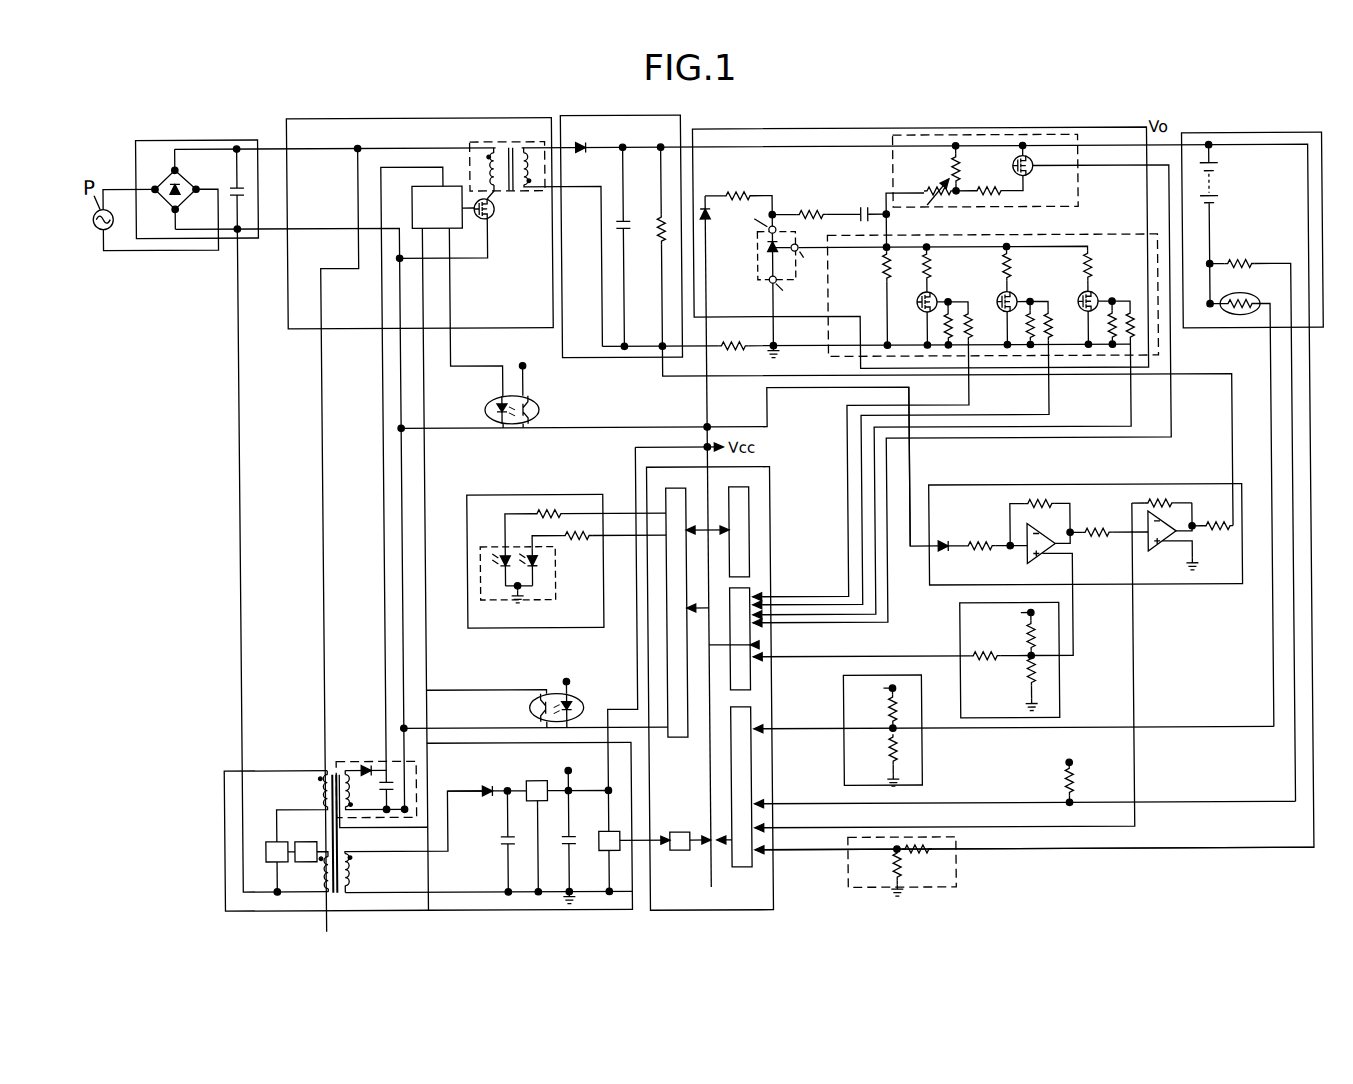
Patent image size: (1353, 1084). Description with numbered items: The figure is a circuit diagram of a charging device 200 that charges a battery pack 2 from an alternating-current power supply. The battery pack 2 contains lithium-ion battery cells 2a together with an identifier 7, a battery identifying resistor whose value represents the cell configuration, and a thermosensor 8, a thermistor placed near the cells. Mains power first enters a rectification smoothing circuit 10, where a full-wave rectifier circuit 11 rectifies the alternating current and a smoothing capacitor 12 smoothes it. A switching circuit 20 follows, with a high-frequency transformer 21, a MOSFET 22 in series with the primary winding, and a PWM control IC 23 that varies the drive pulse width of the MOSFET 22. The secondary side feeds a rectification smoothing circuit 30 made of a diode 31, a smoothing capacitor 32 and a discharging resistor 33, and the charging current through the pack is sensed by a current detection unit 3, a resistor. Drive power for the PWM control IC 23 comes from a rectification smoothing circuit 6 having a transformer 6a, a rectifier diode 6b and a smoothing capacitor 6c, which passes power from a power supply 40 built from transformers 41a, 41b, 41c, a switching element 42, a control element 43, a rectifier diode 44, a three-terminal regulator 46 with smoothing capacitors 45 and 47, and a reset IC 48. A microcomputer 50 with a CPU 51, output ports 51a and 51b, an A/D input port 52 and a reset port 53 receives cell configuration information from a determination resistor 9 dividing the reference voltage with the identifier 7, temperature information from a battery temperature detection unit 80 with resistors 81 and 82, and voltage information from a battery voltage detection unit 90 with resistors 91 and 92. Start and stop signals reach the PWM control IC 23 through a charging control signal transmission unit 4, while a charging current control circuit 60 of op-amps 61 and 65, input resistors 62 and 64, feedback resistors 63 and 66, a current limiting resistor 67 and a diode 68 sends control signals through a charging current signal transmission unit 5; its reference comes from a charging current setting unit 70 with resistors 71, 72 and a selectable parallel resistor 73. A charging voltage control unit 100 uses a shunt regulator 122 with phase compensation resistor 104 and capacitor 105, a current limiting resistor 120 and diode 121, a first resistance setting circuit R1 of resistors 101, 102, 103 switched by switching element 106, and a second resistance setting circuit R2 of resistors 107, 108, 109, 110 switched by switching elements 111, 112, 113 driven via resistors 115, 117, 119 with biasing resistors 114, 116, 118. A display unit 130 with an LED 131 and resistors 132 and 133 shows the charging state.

The charging device 200 is at (125, 106).
The battery pack 2 is at (1283, 135).
The battery cells 2a is at (1220, 189).
The current detection unit 3 is at (740, 343).
The charging control signal transmission unit 4 is at (526, 707).
The charging current signal transmission unit 5 is at (490, 403).
The rectification smoothing circuit 6 is at (345, 760).
The transformer 6a is at (348, 791).
The rectifier diode 6b is at (365, 766).
The smoothing capacitor 6c is at (380, 778).
The identifier 7 is at (1244, 261).
The thermosensor 8 is at (1255, 299).
The second battery type determination resistor 9 is at (1072, 779).
The rectification smoothing circuit 10 is at (165, 138).
The full-wave rectifier circuit 11 is at (168, 181).
The smoothing capacitor 12 is at (231, 183).
The switching circuit 20 is at (306, 117).
The high-frequency transformer 21 is at (471, 147).
The MOSFET 22 is at (495, 206).
The PWM control IC 23 is at (413, 200).
The rectification smoothing circuit 30 is at (600, 115).
The diode 31 is at (589, 145).
The smoothing capacitor 32 is at (627, 222).
The discharging resistor 33 is at (658, 233).
The power supply 40 is at (220, 791).
The transformer 41a is at (318, 793).
The transformer 41b is at (318, 877).
The transformer 41c is at (346, 877).
The switching element 42 is at (265, 840).
The control element 43 is at (301, 840).
The rectifier diode 44 is at (483, 799).
The smoothing capacitor 45 is at (496, 846).
The three-terminal regulator 46 is at (533, 780).
The smoothing capacitor 47 is at (560, 837).
The reset IC 48 is at (600, 831).
The microcomputer 50 is at (768, 481).
The central processing unit 51 is at (747, 501).
The output port 51a is at (664, 496).
The output port 51b is at (747, 591).
The A/D input port 52 is at (738, 867).
The reset port 53 is at (673, 832).
The charging current control circuit 60 is at (1195, 486).
The operational amplifier 61 is at (1156, 549).
The input resistor 62 is at (1216, 521).
The feedback resistor 63 is at (1157, 498).
The input resistor 64 is at (1095, 526).
The operational amplifier 65 is at (1025, 560).
The feedback resistor 66 is at (1038, 498).
The current limiting resistor 67 is at (978, 541).
The diode 68 is at (940, 541).
The charging current setting unit 70 is at (957, 633).
The resistor 71 is at (1020, 639).
The resistor 72 is at (1020, 677).
The resistor 73 is at (980, 665).
The battery temperature detection unit 80 is at (840, 691).
The resistor 81 is at (885, 713).
The resistor 82 is at (885, 753).
The battery voltage detection unit 90 is at (951, 865).
The resistor 91 is at (912, 858).
The resistor 92 is at (888, 866).
The charging voltage control unit 100 is at (780, 129).
The resistor 101 is at (963, 171).
The resistor 102 is at (990, 198).
The resistor 103 is at (930, 184).
The phase compensation resistor 104 is at (812, 206).
The capacitor 105 is at (865, 207).
The switching element 106 is at (1032, 174).
The resistor 107 is at (880, 267).
The resistor 108 is at (926, 254).
The resistor 109 is at (1010, 253).
The resistor 110 is at (1094, 263).
The switching element 111 is at (917, 300).
The switching element 112 is at (997, 297).
The switching element 113 is at (1078, 297).
The biasing resistor 114 is at (960, 294).
The resistor 115 is at (972, 346).
The biasing resistor 116 is at (1032, 308).
The resistor 117 is at (1050, 346).
The biasing resistor 118 is at (1114, 308).
The resistor 119 is at (1132, 346).
The current limiting resistor 120 is at (737, 190).
The diode 121 is at (712, 222).
The shunt regulator 122 is at (758, 266).
The display unit 130 is at (490, 494).
The LED 131 is at (478, 568).
The resistor 132 is at (578, 545).
The resistor 133 is at (545, 505).
The first resistance setting circuit R1 is at (1079, 183).
The second resistance setting circuit R2 is at (1112, 233).